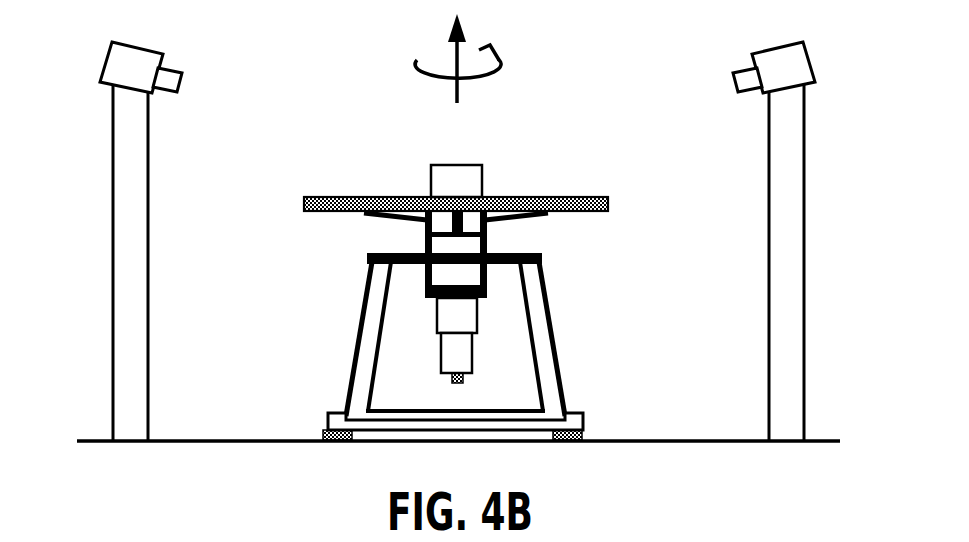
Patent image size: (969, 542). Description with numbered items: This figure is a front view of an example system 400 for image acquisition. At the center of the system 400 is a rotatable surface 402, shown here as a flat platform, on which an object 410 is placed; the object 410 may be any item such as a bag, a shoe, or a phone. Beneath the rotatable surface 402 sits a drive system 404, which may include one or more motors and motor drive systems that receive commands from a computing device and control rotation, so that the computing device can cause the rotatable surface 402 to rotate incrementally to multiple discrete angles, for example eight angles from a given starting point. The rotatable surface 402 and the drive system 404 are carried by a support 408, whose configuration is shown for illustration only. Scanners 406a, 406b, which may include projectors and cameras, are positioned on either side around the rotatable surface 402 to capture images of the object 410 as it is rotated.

The system for image acquisition 400 is at (316, 90).
The rotatable surface 402 is at (398, 197).
The drive system 404 is at (485, 303).
The scanner 406a is at (103, 62).
The scanner 406b is at (815, 60).
The support 408 is at (352, 355).
The object 410 is at (482, 182).